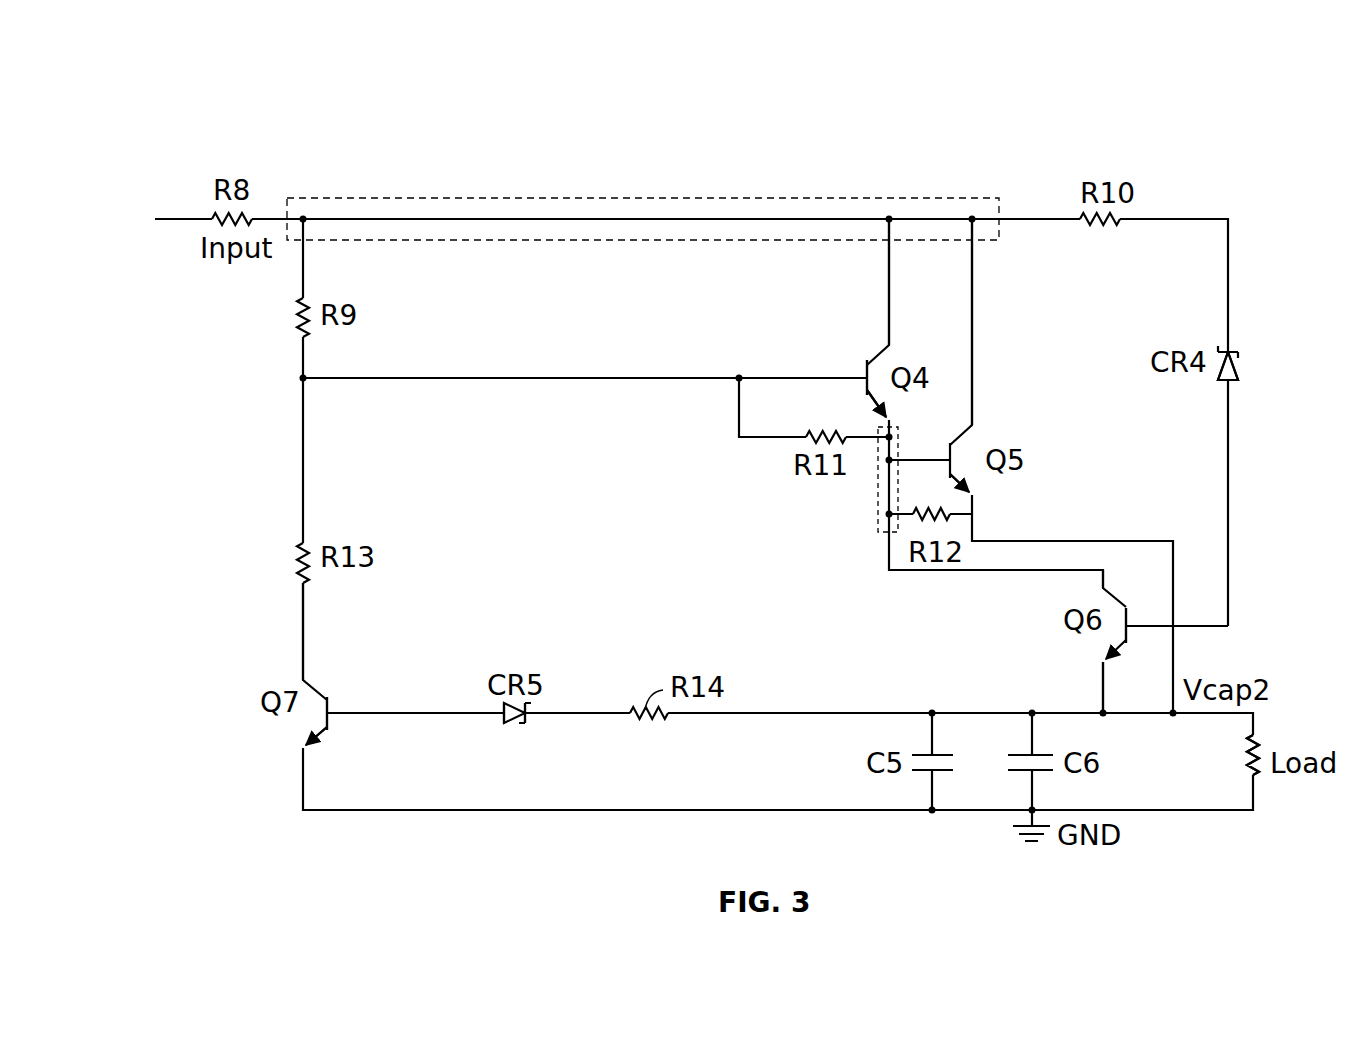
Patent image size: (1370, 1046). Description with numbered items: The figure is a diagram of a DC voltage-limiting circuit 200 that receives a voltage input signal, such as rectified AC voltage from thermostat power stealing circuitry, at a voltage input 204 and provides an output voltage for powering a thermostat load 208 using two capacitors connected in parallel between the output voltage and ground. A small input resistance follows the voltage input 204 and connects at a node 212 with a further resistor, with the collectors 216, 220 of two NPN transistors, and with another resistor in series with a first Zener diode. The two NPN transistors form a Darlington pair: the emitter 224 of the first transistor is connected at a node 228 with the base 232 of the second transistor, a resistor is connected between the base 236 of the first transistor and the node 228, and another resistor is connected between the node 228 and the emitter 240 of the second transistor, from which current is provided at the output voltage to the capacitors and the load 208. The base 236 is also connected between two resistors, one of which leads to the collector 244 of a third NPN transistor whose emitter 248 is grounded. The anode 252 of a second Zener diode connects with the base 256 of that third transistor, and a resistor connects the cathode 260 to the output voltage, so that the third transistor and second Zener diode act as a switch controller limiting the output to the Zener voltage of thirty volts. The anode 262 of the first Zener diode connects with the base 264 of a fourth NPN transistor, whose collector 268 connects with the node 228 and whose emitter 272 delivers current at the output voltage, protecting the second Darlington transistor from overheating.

The DC voltage-limiting circuit 200 is at (1206, 72).
The voltage input 204 is at (162, 219).
The thermostat load 208 is at (1250, 765).
The node 212 is at (611, 198).
The collector of transistor Q4 216 is at (889, 330).
The collector of transistor Q5 220 is at (972, 410).
The emitter of transistor Q4 224 is at (893, 420).
The node 228 is at (877, 526).
The base of transistor Q5 232 is at (937, 463).
The base of transistor Q4 236 is at (863, 386).
The emitter of transistor Q5 240 is at (975, 500).
The collector of transistor Q7 244 is at (311, 685).
The emitter of transistor Q7 248 is at (316, 729).
The anode of Zener diode CR5 252 is at (500, 717).
The base of transistor Q7 256 is at (346, 716).
The cathode 260 is at (530, 717).
The anode of Zener diode CR4 262 is at (1232, 382).
The base of transistor Q6 264 is at (1128, 620).
The collector of transistor Q6 268 is at (1101, 580).
The emitter of transistor Q6 272 is at (1101, 690).